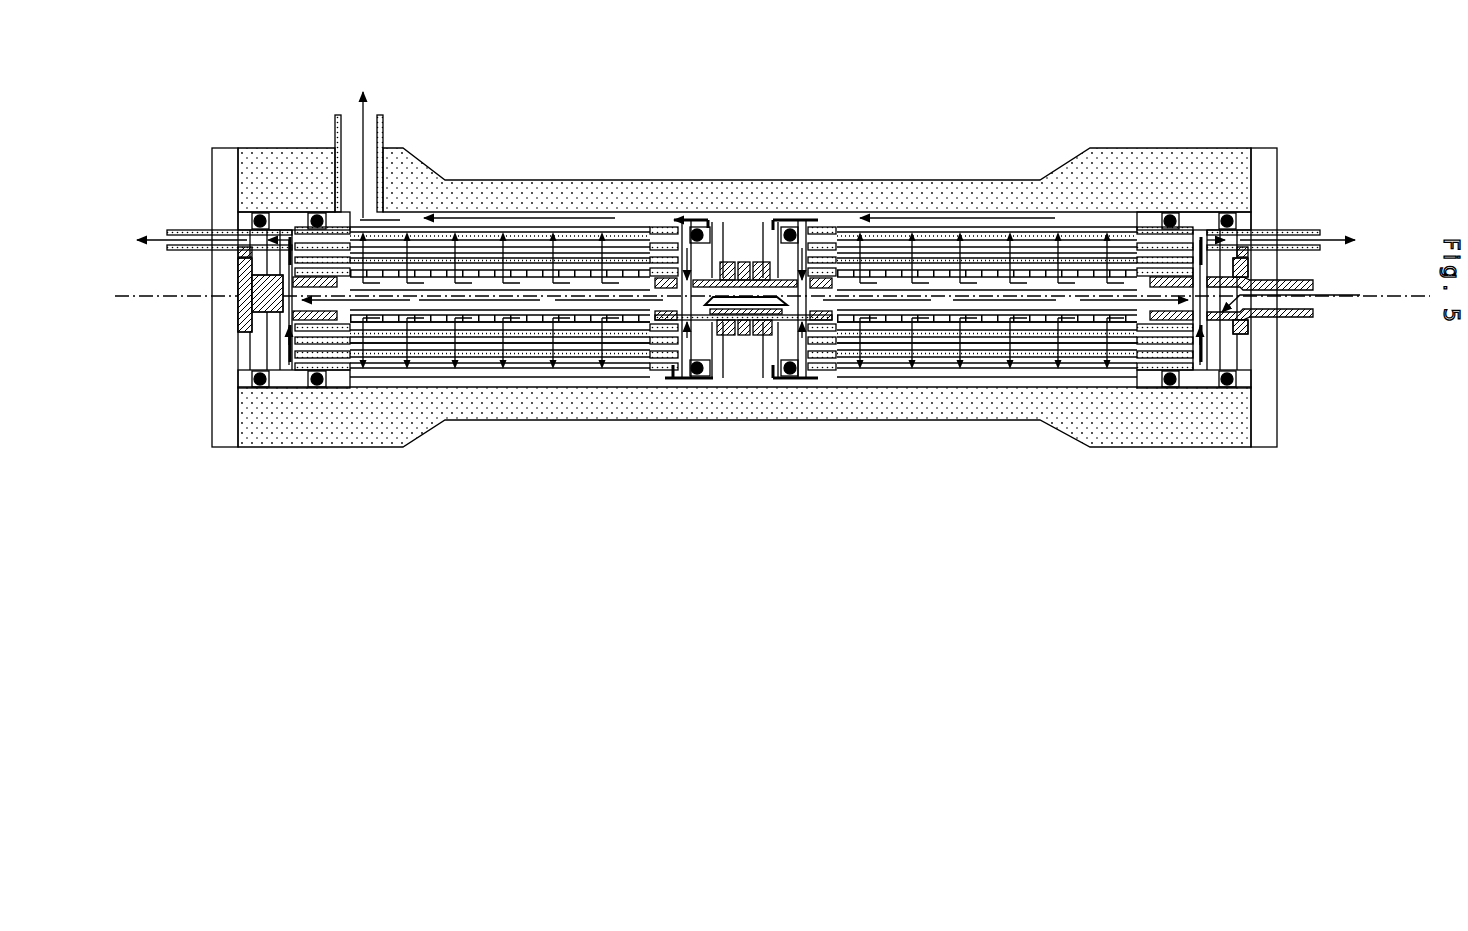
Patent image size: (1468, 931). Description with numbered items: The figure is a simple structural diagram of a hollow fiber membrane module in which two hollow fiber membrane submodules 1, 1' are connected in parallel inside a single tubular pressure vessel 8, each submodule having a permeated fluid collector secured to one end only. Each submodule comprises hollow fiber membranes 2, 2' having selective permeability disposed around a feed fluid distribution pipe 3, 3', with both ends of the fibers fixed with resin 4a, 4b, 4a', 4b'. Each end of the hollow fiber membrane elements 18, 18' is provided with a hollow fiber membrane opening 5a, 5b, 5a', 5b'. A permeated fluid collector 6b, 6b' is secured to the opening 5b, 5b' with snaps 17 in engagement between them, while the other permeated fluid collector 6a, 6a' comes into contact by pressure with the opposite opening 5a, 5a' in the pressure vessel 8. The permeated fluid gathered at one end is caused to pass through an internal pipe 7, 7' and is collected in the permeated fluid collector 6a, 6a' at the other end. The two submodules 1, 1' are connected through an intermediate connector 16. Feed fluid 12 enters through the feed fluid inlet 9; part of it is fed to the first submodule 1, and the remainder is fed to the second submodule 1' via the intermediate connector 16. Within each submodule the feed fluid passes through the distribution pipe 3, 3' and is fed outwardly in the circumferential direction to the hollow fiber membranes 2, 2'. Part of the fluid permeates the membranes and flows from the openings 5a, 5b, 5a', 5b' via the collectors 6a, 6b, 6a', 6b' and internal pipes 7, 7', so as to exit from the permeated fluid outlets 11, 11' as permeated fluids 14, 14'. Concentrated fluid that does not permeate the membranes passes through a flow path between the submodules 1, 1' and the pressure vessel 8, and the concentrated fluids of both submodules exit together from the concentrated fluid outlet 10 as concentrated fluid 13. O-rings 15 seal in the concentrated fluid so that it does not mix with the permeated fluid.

The hollow fiber membrane submodule 1 is at (987, 211).
The hollow fiber membrane submodule 1' is at (500, 213).
The hollow fiber membranes 2 is at (987, 203).
The hollow fiber membranes 2' is at (500, 204).
The feed fluid distribution pipe 3 is at (1001, 202).
The feed fluid distribution pipe 3' is at (500, 199).
The resin 4a is at (1194, 220).
The resin 4a' is at (294, 217).
The resin 4b is at (855, 213).
The resin 4b' is at (634, 215).
The hollow fiber membrane opening 5a is at (1228, 371).
The hollow fiber membrane opening 5a' is at (271, 365).
The hollow fiber membrane opening 5b is at (872, 361).
The hollow fiber membrane opening 5b' is at (629, 358).
The permeated fluid collector 6a is at (1251, 371).
The permeated fluid collector 6a' is at (241, 386).
The permeated fluid collector 6b is at (793, 372).
The permeated fluid collector 6b' is at (706, 375).
The internal pipe 7 is at (1005, 394).
The internal pipe 7' is at (482, 400).
The pressure vessel 8 is at (763, 422).
The feed fluid inlet 9 is at (1319, 320).
The concentrated fluid outlet 10 is at (380, 118).
The permeated fluid outlet 11 is at (1286, 147).
The permeated fluid outlet 11' is at (203, 146).
The feed fluid 12 is at (1297, 312).
The concentrated fluid 13 is at (366, 140).
The permeated fluid 14 is at (1286, 215).
The permeated fluid 14' is at (212, 220).
The O-rings 15 is at (321, 387).
The intermediate connector 16 is at (745, 337).
The snaps 17 is at (777, 220).
The hollow fiber membrane element 18 is at (987, 482).
The hollow fiber membrane element 18' is at (500, 480).